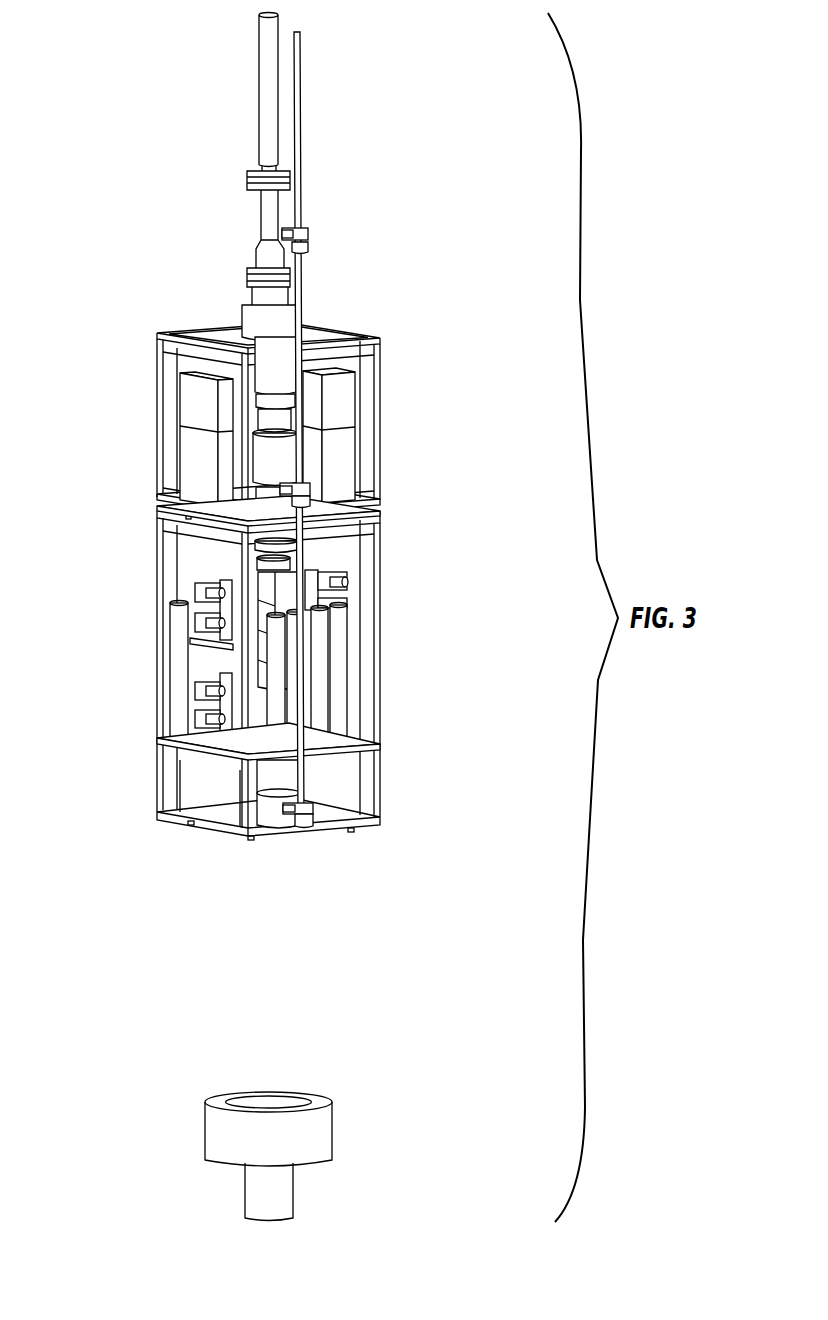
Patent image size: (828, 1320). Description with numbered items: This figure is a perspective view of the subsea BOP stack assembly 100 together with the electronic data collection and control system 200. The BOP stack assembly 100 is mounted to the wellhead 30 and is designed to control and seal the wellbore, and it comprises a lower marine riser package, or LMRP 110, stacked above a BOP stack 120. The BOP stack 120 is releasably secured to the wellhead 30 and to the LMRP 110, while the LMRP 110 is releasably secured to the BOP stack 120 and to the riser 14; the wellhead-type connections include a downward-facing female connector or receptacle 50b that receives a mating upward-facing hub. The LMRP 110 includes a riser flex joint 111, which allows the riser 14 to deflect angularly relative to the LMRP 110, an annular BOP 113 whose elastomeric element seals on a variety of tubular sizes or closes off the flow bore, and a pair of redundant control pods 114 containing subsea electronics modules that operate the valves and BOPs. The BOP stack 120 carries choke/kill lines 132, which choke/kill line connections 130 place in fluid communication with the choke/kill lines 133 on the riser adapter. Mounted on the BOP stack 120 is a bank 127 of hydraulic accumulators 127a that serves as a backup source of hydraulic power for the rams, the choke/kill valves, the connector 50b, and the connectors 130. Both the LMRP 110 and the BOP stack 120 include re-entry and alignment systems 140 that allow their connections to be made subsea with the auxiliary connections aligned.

The riser 14 is at (268, 80).
The choke/kill lines 133 is at (300, 130).
The riser flex joint 111 is at (277, 378).
The control pods 114 is at (198, 405).
The lower marine riser package 110 is at (388, 411).
The annular BOP 113 is at (283, 455).
The choke/kill line connections 130 is at (312, 498).
The electronic data collection and control system 200 is at (488, 511).
The re-entry and alignment systems 140 is at (350, 508).
The choke/kill lines 132 is at (302, 565).
The BOP stack assembly 100 is at (117, 569).
The BOP stack 120 is at (393, 602).
The bank of hydraulic accumulators 127 is at (346, 641).
The hydraulic accumulators 127a is at (277, 720).
The female connector or receptacle 50b is at (268, 815).
The wellhead 30 is at (312, 1135).